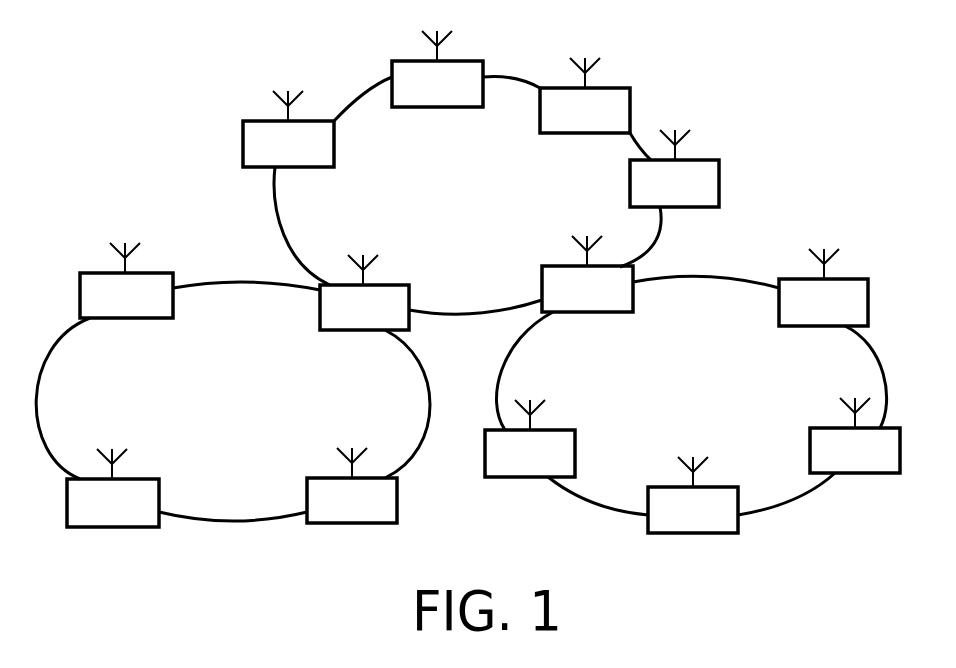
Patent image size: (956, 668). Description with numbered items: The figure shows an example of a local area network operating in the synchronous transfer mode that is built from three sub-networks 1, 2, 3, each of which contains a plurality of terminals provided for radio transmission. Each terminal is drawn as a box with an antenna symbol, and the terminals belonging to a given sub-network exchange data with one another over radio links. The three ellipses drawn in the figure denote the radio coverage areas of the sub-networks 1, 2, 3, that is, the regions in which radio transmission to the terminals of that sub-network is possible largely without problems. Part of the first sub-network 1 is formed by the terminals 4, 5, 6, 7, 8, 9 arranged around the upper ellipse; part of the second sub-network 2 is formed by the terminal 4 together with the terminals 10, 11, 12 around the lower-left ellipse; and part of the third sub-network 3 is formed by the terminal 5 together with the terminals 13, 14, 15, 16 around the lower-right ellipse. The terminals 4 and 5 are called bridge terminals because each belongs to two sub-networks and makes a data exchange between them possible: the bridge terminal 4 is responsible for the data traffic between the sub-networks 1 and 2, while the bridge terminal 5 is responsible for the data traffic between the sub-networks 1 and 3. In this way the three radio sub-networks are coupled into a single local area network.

The sub-network 1 is at (378, 143).
The sub-network 2 is at (270, 328).
The sub-network 3 is at (710, 303).
The bridge terminal 4 is at (400, 290).
The bridge terminal 5 is at (558, 273).
The terminal 6 is at (703, 175).
The terminal 7 is at (617, 100).
The terminal 8 is at (465, 72).
The terminal 9 is at (255, 130).
The terminal 10 is at (105, 283).
The terminal 11 is at (142, 493).
The terminal 12 is at (392, 493).
The terminal 13 is at (560, 443).
The terminal 14 is at (713, 495).
The terminal 15 is at (830, 443).
The terminal 16 is at (850, 290).